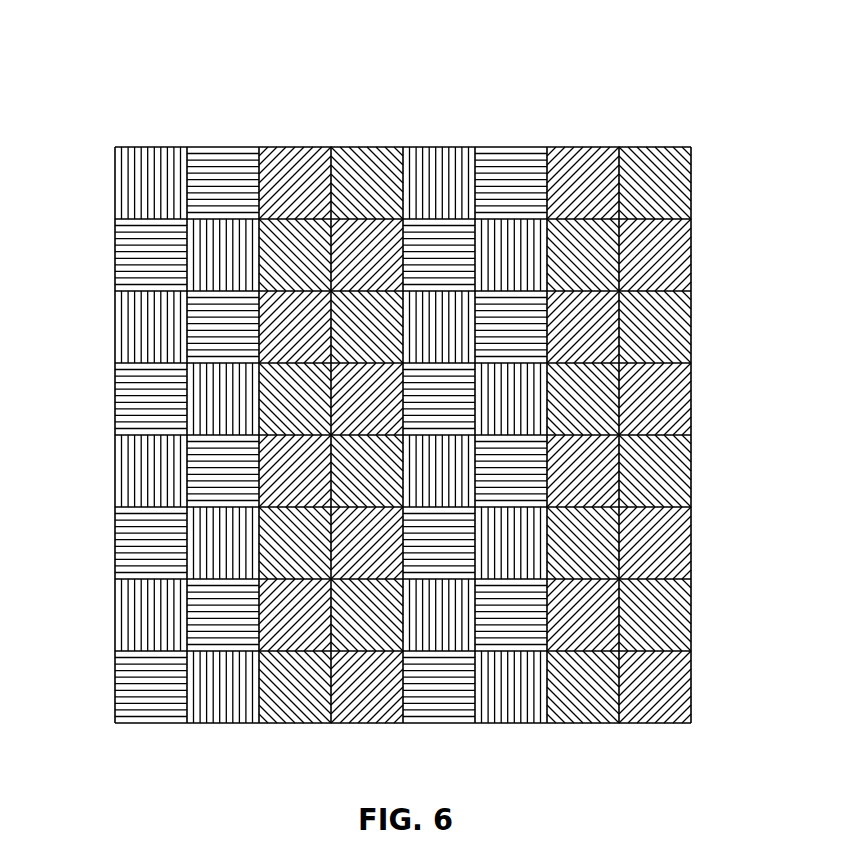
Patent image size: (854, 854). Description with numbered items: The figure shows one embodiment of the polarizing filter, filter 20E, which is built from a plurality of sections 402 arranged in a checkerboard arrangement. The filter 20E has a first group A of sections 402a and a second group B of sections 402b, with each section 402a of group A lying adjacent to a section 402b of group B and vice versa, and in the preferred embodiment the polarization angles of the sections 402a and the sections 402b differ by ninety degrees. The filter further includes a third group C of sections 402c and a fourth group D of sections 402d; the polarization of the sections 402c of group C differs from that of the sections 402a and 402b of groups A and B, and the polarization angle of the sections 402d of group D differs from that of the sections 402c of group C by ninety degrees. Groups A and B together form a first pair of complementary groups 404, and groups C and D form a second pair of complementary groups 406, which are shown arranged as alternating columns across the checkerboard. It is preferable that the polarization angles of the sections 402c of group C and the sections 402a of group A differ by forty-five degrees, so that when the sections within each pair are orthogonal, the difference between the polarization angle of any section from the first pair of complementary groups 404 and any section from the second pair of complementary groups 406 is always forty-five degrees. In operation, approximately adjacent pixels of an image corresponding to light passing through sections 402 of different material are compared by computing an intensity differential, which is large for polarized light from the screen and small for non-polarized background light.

The polarizing filter 20E is at (436, 396).
The section 402 is at (670, 612).
The section of group A 402a is at (118, 140).
The section of group B 402b is at (208, 140).
The section of group C 402c is at (292, 140).
The section of group D 402d is at (378, 140).
The first pair of complementary groups 404 is at (253, 83).
The second pair of complementary groups 406 is at (400, 83).
The first group A is at (425, 142).
The second group B is at (500, 145).
The third group C is at (577, 145).
The fourth group D is at (655, 145).